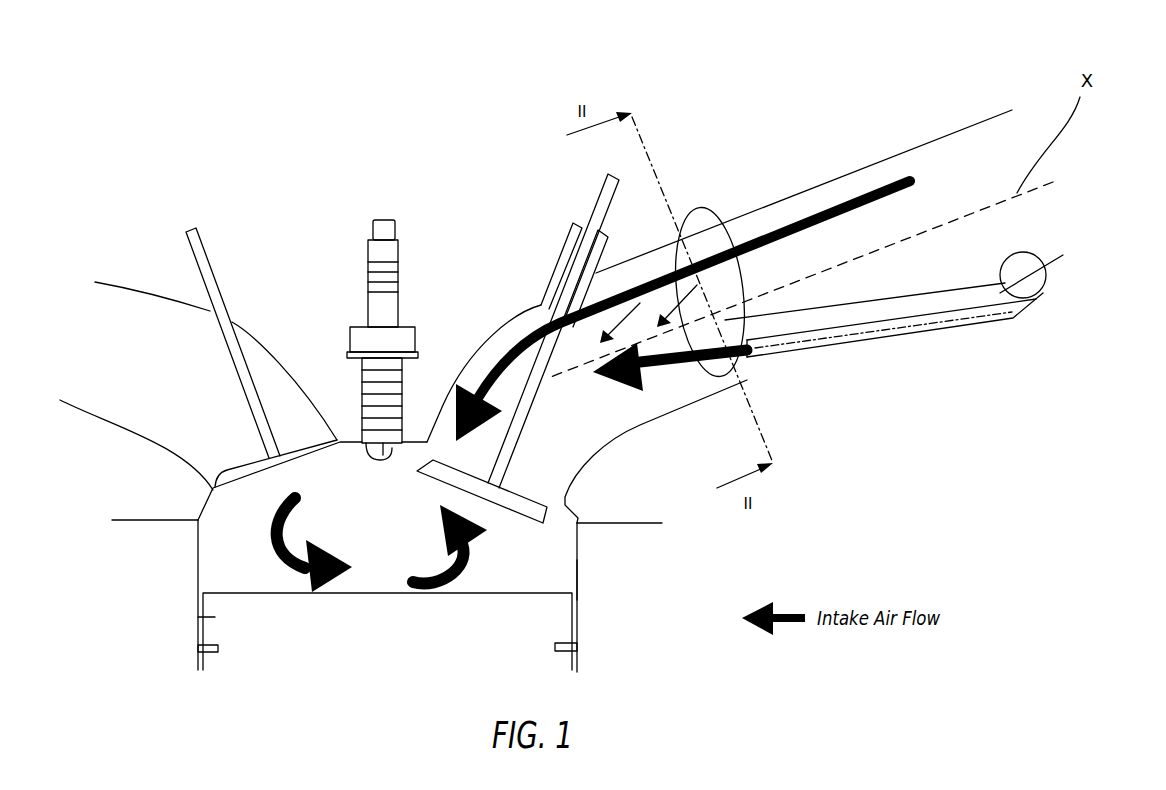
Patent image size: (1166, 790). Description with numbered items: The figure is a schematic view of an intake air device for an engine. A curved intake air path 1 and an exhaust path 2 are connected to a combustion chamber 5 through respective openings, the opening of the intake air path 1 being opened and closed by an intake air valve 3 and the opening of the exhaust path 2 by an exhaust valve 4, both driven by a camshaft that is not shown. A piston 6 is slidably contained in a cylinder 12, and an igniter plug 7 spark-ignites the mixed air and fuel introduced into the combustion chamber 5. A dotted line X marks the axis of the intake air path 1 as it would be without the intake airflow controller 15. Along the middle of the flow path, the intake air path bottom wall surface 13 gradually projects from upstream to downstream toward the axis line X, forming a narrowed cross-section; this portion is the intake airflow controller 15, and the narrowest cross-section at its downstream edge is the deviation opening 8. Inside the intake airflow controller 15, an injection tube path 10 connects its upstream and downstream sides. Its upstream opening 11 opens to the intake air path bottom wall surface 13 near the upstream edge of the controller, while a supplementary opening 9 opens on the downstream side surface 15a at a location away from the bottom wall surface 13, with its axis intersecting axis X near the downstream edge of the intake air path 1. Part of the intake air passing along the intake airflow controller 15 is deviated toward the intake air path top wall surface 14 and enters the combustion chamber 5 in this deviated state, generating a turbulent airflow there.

The intake air path 1 is at (965, 140).
The exhaust path 2 is at (165, 323).
The intake valve 3 is at (600, 192).
The exhaust valve 4 is at (207, 248).
The combustion chamber 5 is at (217, 537).
The piston 6 is at (198, 617).
The igniter plug 7 is at (388, 218).
The deviation opening 8 is at (717, 207).
The supplementary opening 9 is at (745, 362).
The injection tube path 10 is at (942, 333).
The opening 11 is at (1046, 286).
The cylinder 12 is at (577, 575).
The intake air path bottom wall surface 13 is at (640, 433).
The intake air path top wall surface 14 is at (817, 183).
The intake airflow controller 15 is at (853, 316).
The downstream side surface 15a is at (730, 392).